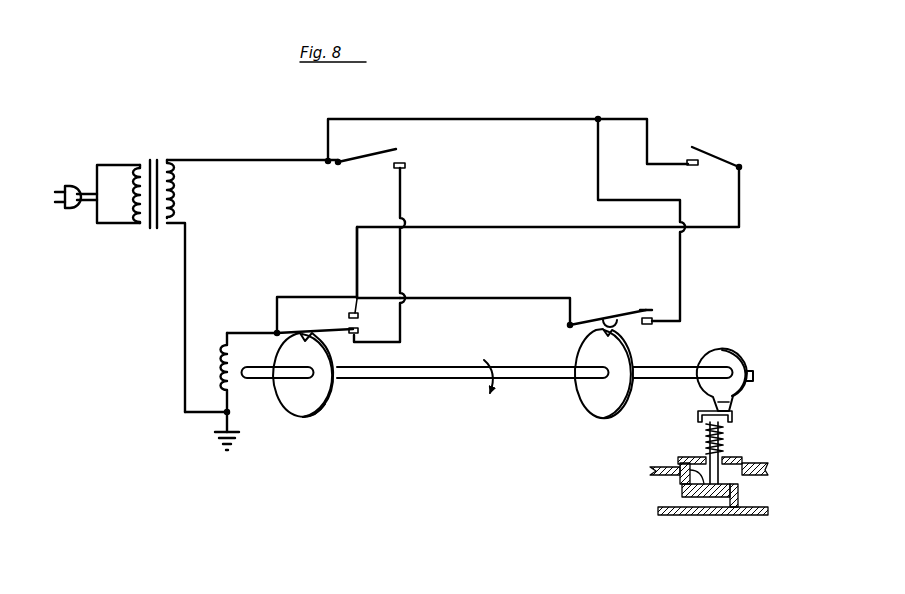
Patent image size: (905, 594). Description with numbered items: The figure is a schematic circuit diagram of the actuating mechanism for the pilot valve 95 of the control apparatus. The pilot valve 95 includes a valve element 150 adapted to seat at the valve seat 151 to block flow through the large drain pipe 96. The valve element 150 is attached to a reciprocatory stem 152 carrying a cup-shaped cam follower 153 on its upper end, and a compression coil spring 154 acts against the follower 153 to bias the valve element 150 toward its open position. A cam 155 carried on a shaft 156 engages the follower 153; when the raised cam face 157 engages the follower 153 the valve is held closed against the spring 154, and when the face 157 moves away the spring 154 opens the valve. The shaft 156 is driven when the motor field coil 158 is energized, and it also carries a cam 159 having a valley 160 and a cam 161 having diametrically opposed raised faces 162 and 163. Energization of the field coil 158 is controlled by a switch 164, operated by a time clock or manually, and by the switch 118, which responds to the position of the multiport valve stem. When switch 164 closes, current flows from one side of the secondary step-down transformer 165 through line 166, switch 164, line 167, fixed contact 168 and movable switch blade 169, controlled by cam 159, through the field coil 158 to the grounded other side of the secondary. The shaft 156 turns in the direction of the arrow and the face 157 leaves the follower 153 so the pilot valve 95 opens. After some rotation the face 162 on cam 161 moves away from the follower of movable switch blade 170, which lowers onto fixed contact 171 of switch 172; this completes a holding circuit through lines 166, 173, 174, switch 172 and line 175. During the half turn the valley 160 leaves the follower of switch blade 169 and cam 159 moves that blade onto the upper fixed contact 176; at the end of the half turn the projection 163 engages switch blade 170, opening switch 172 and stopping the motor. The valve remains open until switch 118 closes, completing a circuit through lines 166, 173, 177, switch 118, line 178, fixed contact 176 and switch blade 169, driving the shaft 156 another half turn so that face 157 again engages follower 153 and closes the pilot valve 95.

The secondary step-down transformer 165 is at (160, 157).
The line 166 is at (255, 160).
The line 173 is at (513, 119).
The switch 164 is at (412, 158).
The line 174 is at (598, 172).
The line 177 is at (652, 137).
The switch 118 is at (732, 151).
The line 178 is at (742, 201).
The line 167 is at (402, 269).
The line 175 is at (512, 300).
The movable switch blade 170 is at (610, 312).
The switch 172 is at (670, 300).
The fixed contact 171 is at (650, 325).
The raised face 162 is at (598, 329).
The valley 160 is at (274, 330).
The movable switch blade 169 is at (290, 331).
The upper fixed contact 176 is at (360, 315).
The fixed contact 168 is at (360, 331).
The motor field coil 158 is at (232, 400).
The cam 159 is at (305, 413).
The shaft 156 is at (665, 380).
The cam 161 is at (586, 393).
The raised face 163 is at (597, 415).
The cam 155 is at (733, 362).
The raised cam face 157 is at (705, 411).
The cam follower 153 is at (735, 411).
The reciprocatory stem 152 is at (728, 458).
The compression coil spring 154 is at (708, 444).
The pilot valve 95 is at (769, 466).
The valve element 150 is at (712, 497).
The valve seat 151 is at (688, 487).
The drain pipe 96 is at (736, 516).